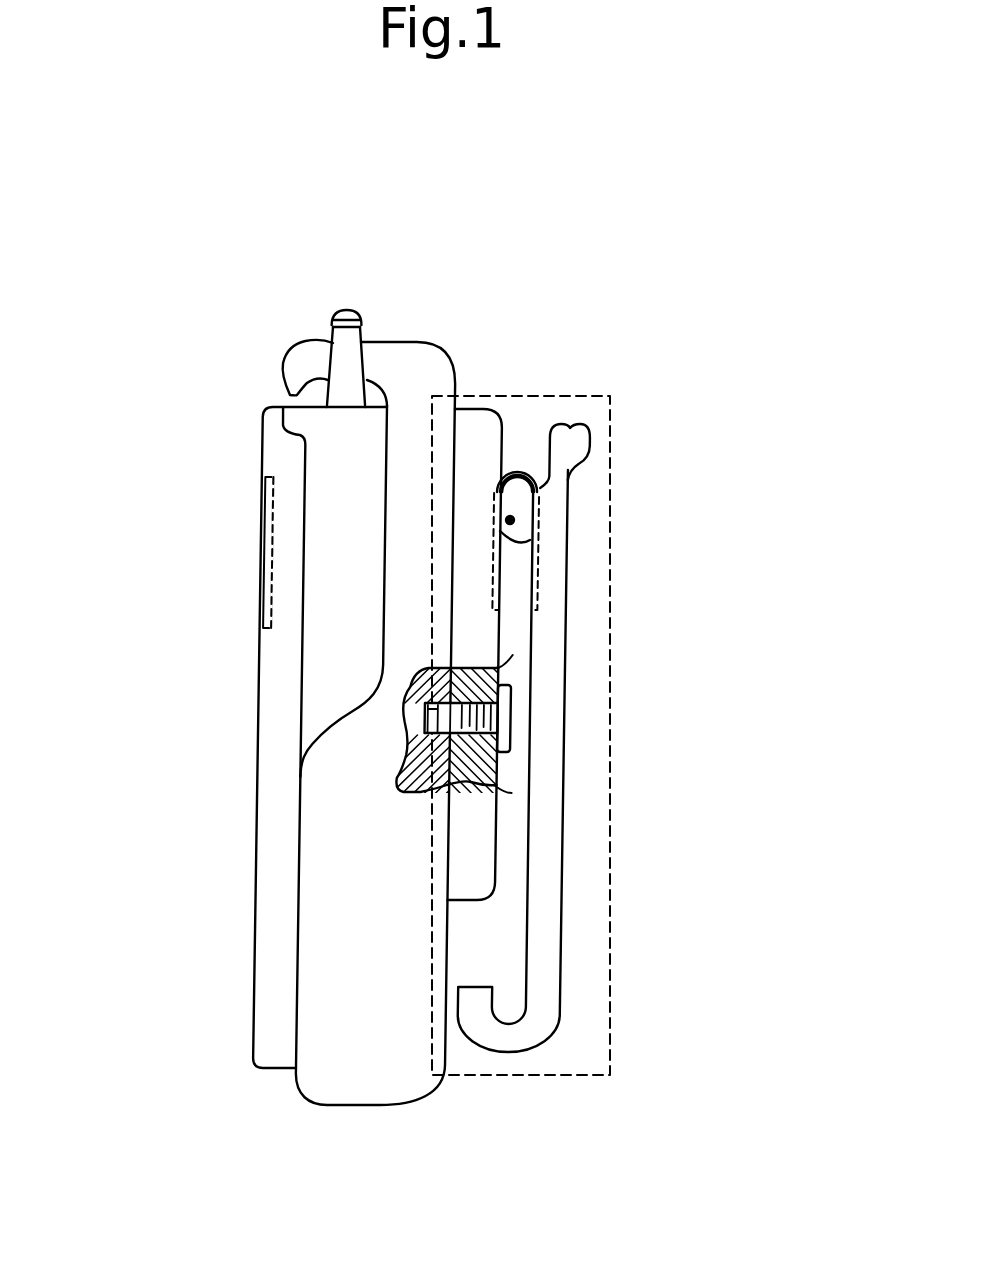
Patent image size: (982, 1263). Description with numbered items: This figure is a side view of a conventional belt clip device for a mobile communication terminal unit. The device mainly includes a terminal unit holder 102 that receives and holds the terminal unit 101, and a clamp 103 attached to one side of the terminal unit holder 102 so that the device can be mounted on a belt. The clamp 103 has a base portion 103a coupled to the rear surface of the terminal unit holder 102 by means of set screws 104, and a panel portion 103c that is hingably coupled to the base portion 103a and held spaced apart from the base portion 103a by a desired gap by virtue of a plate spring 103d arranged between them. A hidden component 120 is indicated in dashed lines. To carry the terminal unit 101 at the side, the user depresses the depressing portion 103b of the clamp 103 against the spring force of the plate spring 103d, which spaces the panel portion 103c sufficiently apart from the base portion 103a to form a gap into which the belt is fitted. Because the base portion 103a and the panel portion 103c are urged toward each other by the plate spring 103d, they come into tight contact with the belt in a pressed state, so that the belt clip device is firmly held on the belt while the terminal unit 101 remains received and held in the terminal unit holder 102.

The terminal unit 101 is at (263, 442).
The terminal unit holder 102 is at (412, 370).
The clamp 103 is at (603, 391).
The base portion 103a is at (481, 430).
The depressing portion 103b is at (572, 438).
The panel portion 103c is at (553, 960).
The plate spring 103d is at (500, 510).
The set screws 104 is at (518, 712).
The hidden component (dashed) 120 is at (273, 513).